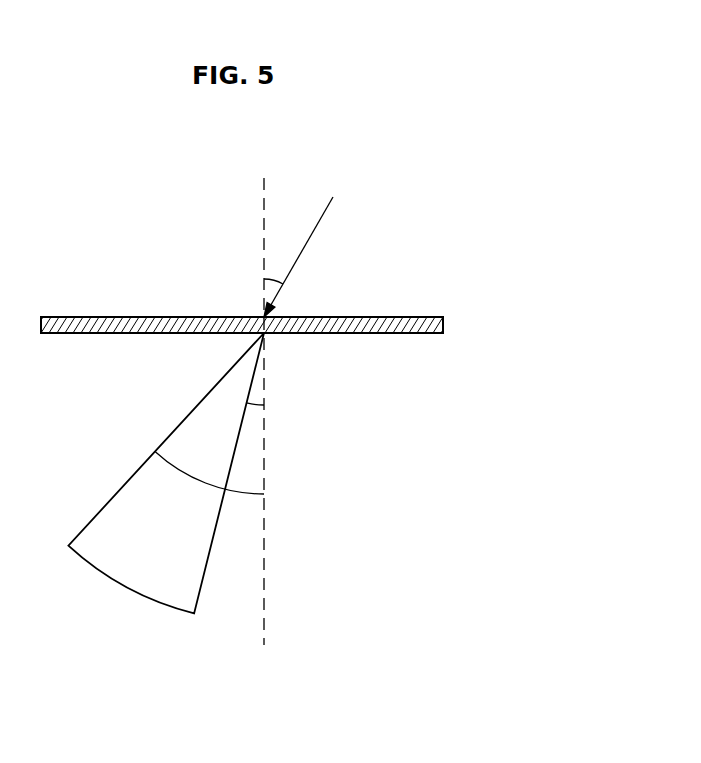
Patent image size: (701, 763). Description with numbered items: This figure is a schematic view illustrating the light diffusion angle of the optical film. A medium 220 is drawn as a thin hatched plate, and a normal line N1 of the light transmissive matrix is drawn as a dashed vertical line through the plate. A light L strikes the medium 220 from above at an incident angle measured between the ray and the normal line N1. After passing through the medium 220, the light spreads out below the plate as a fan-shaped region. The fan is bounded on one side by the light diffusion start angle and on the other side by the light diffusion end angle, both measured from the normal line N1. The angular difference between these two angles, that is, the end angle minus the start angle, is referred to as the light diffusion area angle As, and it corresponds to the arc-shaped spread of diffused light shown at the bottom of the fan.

The medium 220 is at (373, 333).
The normal line N1 is at (263, 400).
The light L is at (304, 246).
The light diffusion area angle As is at (123, 587).